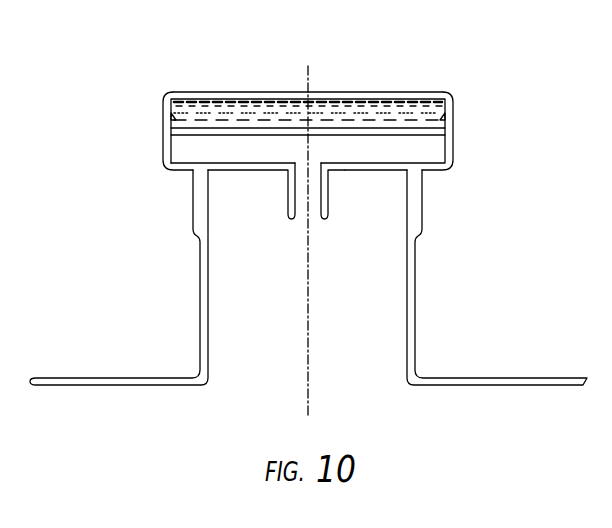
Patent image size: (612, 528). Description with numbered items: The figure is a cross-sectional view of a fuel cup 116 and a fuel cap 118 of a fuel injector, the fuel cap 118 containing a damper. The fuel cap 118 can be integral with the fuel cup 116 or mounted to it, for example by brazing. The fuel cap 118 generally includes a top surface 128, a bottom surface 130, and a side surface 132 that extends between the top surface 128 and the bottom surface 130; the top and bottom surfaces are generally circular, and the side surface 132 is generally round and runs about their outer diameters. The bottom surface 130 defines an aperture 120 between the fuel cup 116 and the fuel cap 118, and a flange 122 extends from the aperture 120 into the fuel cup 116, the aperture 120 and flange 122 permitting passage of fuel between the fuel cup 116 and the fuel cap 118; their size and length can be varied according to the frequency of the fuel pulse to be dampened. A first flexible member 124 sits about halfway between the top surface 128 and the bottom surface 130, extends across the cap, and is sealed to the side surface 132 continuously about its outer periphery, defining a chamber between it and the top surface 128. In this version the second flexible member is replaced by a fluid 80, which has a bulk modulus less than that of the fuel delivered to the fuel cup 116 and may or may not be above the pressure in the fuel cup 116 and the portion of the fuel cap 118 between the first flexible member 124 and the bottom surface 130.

The fluid 80 is at (358, 112).
The fuel cup 116 is at (418, 349).
The fuel cap 118 is at (455, 134).
The aperture 120 is at (317, 166).
The flange 122 is at (283, 204).
The first flexible member 124 is at (413, 138).
The top surface 128 is at (238, 89).
The bottom surface 130 is at (362, 172).
The side surface 132 is at (162, 143).